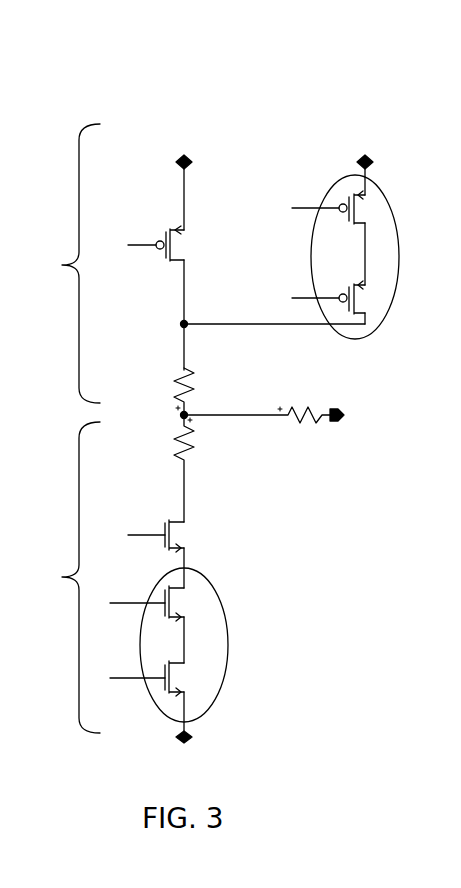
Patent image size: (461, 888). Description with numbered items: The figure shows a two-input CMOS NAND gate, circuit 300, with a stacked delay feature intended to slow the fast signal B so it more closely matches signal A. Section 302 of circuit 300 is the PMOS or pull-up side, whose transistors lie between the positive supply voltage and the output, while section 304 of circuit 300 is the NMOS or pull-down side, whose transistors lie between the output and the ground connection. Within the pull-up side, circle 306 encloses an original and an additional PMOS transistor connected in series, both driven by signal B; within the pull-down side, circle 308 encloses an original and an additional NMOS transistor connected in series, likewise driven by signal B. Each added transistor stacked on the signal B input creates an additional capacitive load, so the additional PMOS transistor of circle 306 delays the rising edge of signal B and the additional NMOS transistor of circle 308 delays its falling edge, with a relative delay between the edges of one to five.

The circuit 300 is at (274, 96).
The section 302 is at (60, 265).
The section 304 is at (60, 577).
The circle 306 is at (399, 199).
The circle 308 is at (228, 589).